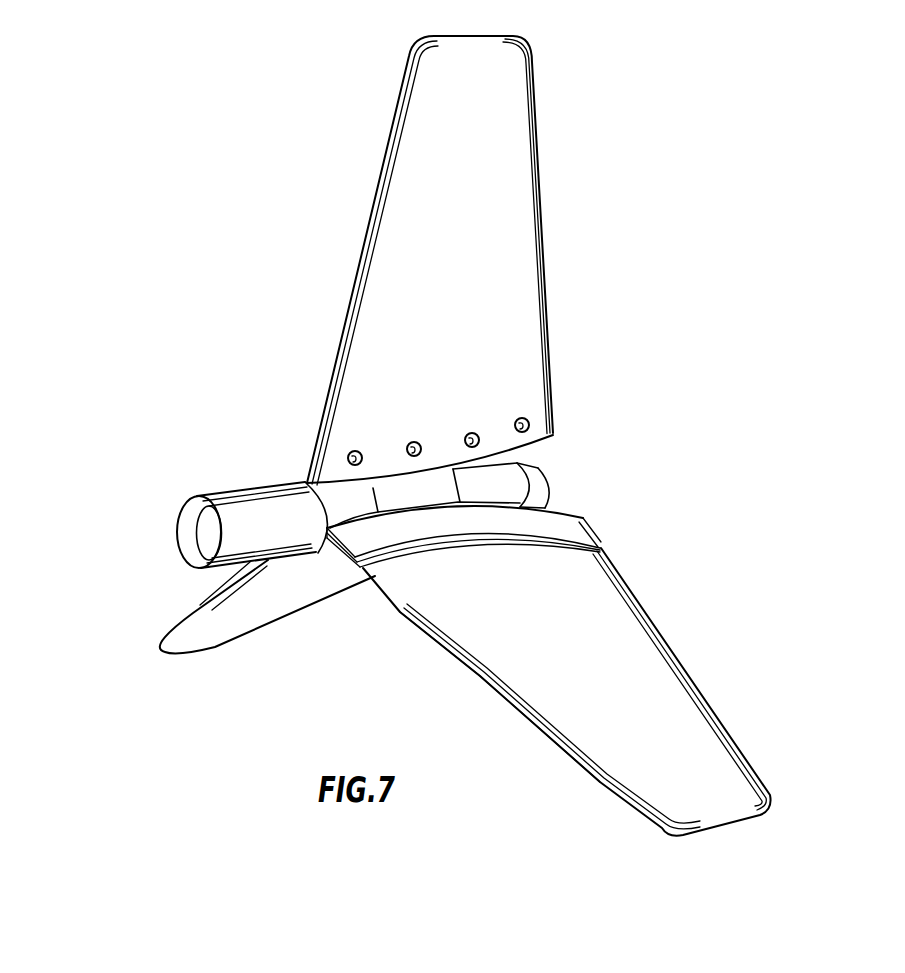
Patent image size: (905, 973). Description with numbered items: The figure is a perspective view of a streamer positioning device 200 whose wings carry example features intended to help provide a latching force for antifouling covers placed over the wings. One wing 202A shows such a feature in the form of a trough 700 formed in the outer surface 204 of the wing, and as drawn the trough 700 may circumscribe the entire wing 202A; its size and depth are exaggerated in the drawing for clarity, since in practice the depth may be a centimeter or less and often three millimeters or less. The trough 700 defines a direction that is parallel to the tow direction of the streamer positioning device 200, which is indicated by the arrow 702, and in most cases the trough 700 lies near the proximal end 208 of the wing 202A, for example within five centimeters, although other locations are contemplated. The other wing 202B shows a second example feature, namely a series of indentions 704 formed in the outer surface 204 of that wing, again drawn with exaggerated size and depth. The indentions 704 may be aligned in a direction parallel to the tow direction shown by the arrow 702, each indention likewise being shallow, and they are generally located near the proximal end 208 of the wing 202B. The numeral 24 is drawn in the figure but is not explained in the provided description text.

The streamer positioning device 200 is at (210, 122).
The wing 202A is at (670, 685).
The wing 202B is at (505, 155).
The outer surface 204 is at (579, 631).
The proximal end 208 is at (537, 452).
The trough 700 is at (578, 541).
The arrow 702 is at (163, 538).
The indentions 704 is at (408, 442).
The fuselage 24 is at (480, 680).